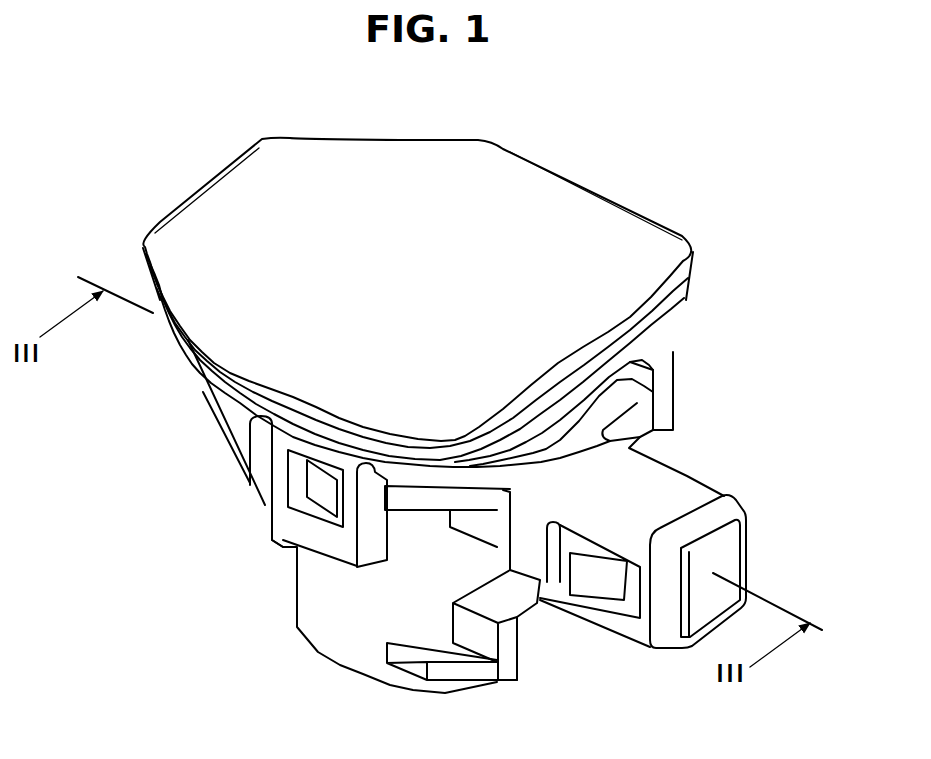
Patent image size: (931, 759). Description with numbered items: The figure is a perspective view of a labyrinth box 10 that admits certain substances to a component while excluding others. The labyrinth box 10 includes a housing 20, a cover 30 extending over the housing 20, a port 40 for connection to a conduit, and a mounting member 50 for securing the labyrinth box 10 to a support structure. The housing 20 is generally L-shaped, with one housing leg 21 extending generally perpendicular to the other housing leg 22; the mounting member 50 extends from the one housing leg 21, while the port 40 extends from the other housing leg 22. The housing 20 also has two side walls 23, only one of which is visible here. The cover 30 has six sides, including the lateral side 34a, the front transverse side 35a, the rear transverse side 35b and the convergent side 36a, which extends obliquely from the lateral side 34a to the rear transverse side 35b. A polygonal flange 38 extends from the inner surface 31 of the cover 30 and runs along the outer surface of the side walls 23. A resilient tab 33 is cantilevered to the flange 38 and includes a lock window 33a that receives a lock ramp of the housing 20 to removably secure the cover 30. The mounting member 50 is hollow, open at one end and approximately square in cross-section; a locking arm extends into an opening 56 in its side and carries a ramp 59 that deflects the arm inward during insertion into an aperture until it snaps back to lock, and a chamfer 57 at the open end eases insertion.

The labyrinth box 10 is at (770, 210).
The housing 20 is at (315, 540).
The one housing leg 21 is at (367, 650).
The other housing leg 22 is at (239, 570).
The side wall 23 is at (240, 436).
The cover 30 is at (438, 321).
The inner surface 31 is at (221, 384).
The resilient tab 33 is at (236, 504).
The lock window 33a is at (303, 476).
The lateral side 34a is at (590, 190).
The front transverse side 35a is at (557, 362).
The rear transverse side 35b is at (223, 173).
The convergent side 36a is at (368, 138).
The flange 38 is at (180, 332).
The port 40 is at (277, 540).
The mounting member 50 is at (676, 516).
The opening 56 is at (547, 520).
The chamfer 57 is at (728, 497).
The ramp 59 is at (583, 575).